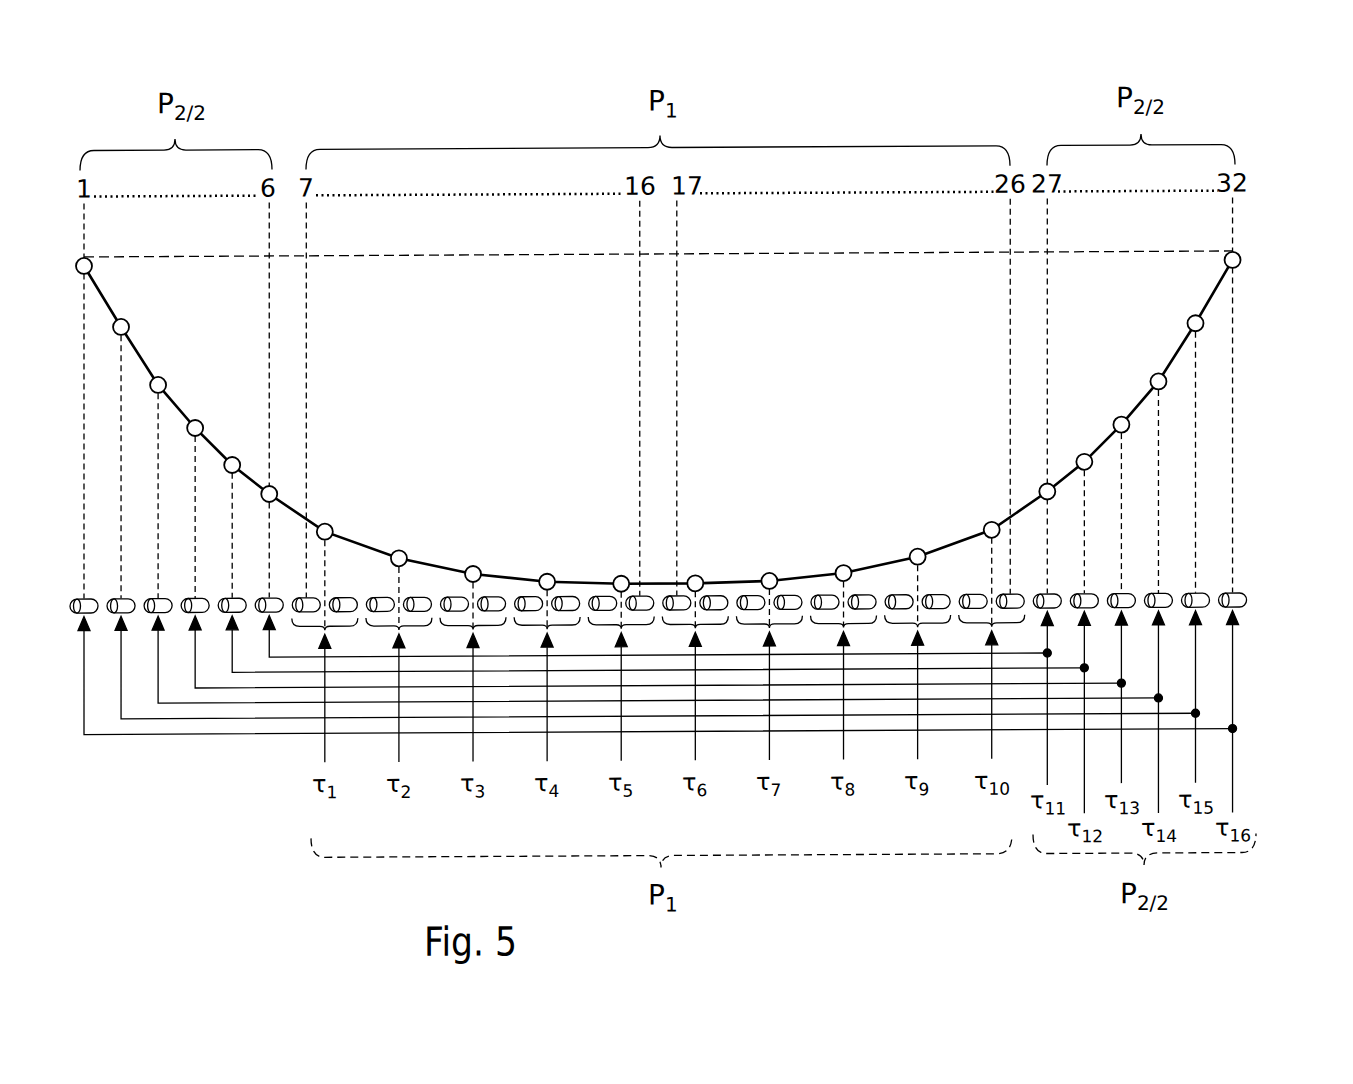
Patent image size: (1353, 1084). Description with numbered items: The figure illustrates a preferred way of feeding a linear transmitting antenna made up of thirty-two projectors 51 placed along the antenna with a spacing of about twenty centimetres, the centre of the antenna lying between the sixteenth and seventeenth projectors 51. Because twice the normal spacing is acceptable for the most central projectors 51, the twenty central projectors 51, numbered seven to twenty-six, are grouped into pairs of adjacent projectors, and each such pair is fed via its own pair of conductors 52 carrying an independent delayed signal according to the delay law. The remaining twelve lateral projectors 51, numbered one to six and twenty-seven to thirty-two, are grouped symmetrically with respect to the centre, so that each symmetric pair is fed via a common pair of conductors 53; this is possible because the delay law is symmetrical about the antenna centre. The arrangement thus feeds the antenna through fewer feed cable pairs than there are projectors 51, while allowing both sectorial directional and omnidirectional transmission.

The projector 51 is at (1239, 605).
The pair of conductors 52 is at (473, 750).
The pair of conductors 53 is at (1236, 775).